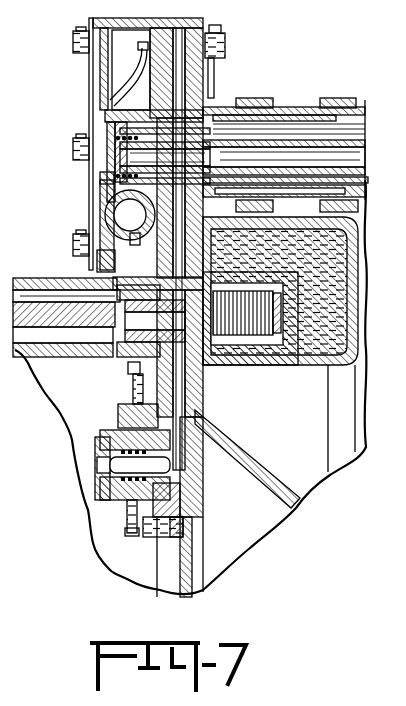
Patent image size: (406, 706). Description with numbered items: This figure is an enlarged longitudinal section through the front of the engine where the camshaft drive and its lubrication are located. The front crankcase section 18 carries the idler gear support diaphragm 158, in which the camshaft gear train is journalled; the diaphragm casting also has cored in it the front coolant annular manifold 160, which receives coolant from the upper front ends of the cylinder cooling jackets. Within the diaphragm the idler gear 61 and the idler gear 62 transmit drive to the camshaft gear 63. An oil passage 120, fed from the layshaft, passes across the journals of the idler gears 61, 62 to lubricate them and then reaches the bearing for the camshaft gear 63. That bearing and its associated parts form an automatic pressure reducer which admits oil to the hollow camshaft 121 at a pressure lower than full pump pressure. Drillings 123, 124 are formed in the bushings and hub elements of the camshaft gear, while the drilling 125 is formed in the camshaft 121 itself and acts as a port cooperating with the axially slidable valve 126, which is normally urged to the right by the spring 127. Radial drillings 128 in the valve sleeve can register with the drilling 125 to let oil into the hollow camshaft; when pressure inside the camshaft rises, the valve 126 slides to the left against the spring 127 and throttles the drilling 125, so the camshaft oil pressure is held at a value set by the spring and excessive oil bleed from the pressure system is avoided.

The front crankcase section 18 is at (236, 442).
The idler gear 61 is at (127, 538).
The idler gear 62 is at (128, 366).
The camshaft gear 63 is at (130, 70).
The oil passage 120 is at (178, 472).
The hollow camshaft 121 is at (277, 169).
The drilling 123 is at (130, 231).
The drilling 124 is at (130, 215).
The drilling 125 is at (212, 98).
The valve 126 is at (182, 160).
The spring 127 is at (107, 178).
The radial drillings 128 is at (158, 162).
The idler gear support diaphragm 158 is at (193, 540).
The front coolant annular manifold 160 is at (305, 368).